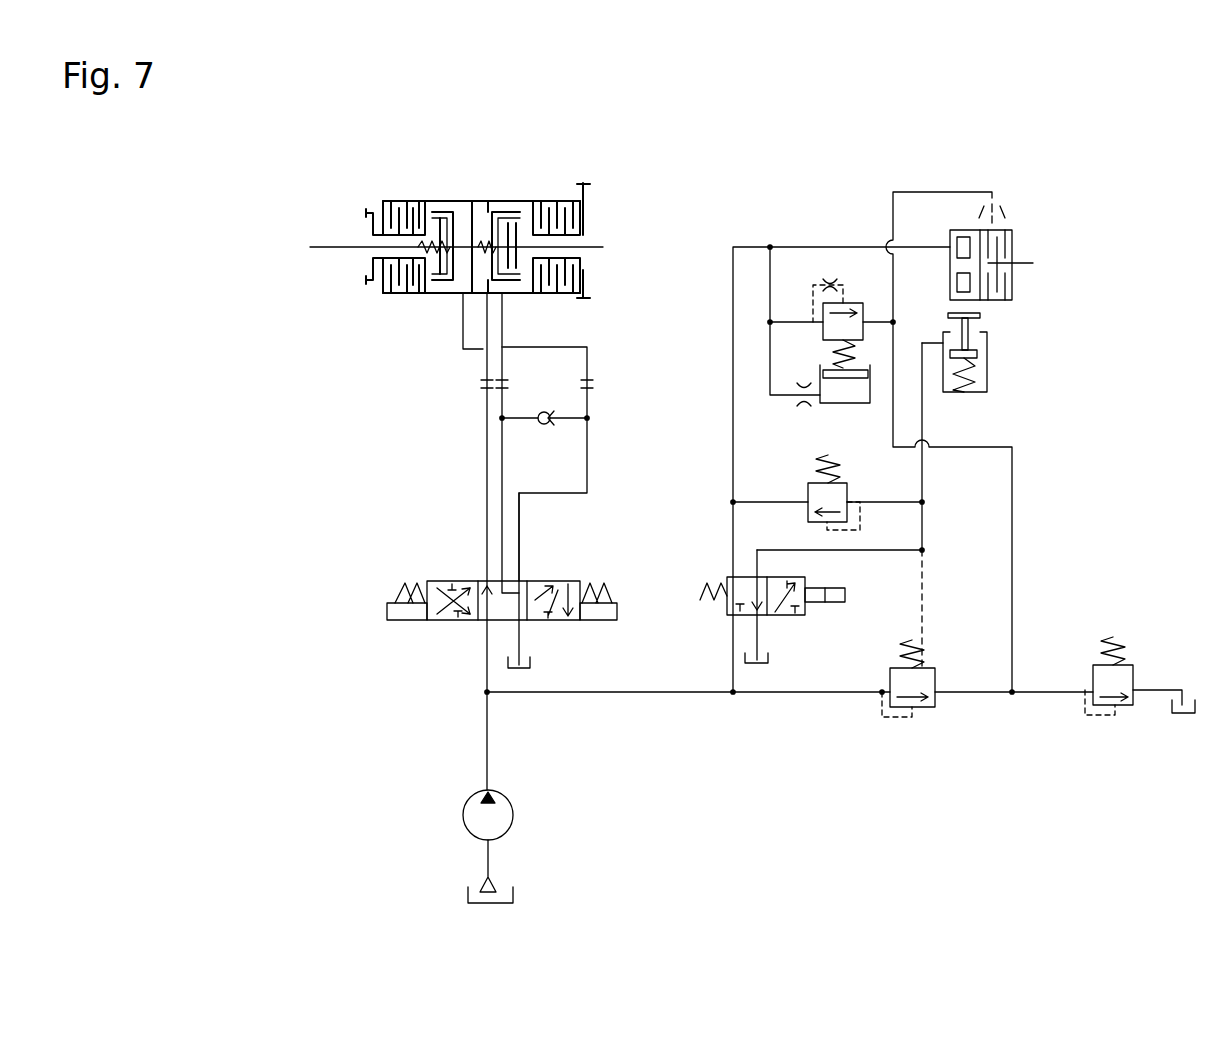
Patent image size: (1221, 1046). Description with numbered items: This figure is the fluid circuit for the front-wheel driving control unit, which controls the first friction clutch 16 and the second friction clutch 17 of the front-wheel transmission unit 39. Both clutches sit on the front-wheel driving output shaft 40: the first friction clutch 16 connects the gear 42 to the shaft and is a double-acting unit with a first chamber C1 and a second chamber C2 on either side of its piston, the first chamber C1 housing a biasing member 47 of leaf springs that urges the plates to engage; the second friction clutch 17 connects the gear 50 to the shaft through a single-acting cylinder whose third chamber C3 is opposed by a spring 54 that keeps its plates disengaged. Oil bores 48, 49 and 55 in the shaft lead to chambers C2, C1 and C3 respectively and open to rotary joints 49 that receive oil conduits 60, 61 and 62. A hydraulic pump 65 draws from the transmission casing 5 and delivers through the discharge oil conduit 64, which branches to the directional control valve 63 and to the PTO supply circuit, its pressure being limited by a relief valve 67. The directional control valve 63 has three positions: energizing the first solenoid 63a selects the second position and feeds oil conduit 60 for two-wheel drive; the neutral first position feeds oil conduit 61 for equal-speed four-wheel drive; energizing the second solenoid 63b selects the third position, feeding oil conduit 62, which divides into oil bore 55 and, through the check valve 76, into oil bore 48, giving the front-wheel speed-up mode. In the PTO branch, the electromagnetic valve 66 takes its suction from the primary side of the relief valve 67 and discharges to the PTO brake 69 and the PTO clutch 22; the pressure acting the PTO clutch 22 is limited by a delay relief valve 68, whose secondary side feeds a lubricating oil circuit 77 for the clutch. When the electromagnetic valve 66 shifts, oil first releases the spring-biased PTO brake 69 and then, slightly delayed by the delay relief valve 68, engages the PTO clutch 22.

The front-wheel transmission unit 39 is at (364, 328).
The front-wheel driving output shaft 40 is at (600, 238).
The second friction clutch 17 is at (416, 184).
The first friction clutch 16 is at (538, 188).
The gear 50 is at (370, 280).
The gear 42 is at (583, 291).
The third chamber C3 is at (460, 210).
The first chamber C1 is at (488, 218).
The second chamber C2 is at (510, 222).
The biasing member 47 is at (481, 218).
The spring 54 is at (440, 259).
The oil bore 48 is at (502, 330).
The oil bore 55 is at (460, 341).
The oil bore 49 is at (480, 358).
The check valve 76 is at (543, 410).
The oil conduit 61 is at (485, 485).
The oil conduit 60 is at (502, 478).
The oil conduit 62 is at (519, 530).
The directional control valve 63 is at (446, 578).
The first solenoid 63a is at (616, 606).
The second solenoid 63b is at (387, 610).
The transmission casing 5 is at (531, 660).
The discharge oil conduit 64 is at (487, 743).
The hydraulic pump 65 is at (462, 813).
The lubricating oil circuit 77 is at (892, 196).
The PTO clutch 22 is at (1026, 300).
The delay relief valve 68 is at (821, 418).
The PTO brake 69 is at (992, 360).
The electromagnetic valve 66 is at (791, 618).
The relief valve 67 is at (920, 710).